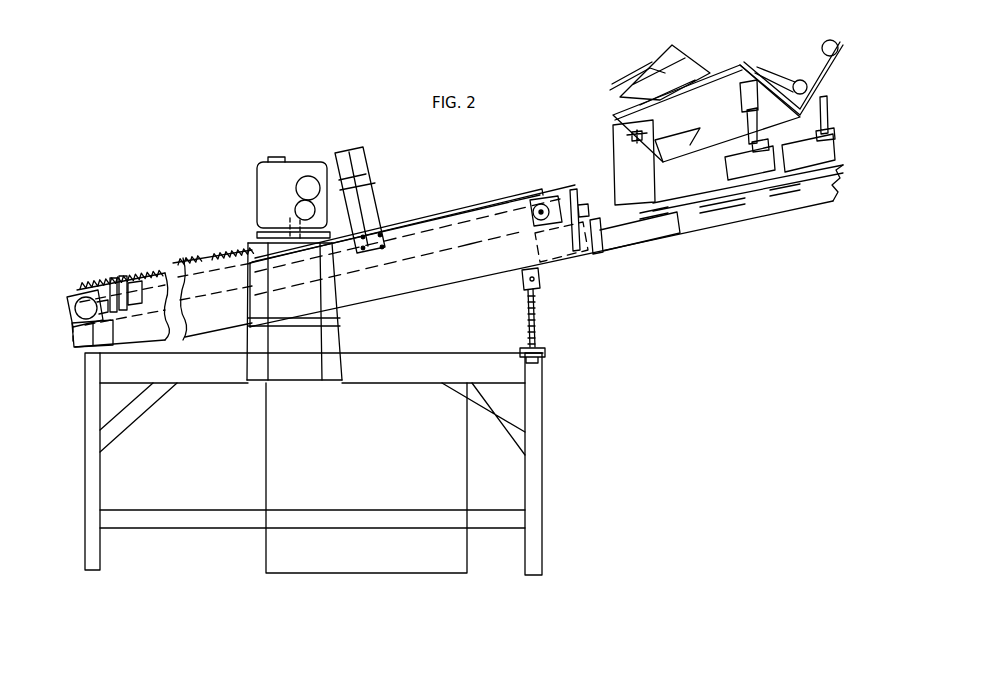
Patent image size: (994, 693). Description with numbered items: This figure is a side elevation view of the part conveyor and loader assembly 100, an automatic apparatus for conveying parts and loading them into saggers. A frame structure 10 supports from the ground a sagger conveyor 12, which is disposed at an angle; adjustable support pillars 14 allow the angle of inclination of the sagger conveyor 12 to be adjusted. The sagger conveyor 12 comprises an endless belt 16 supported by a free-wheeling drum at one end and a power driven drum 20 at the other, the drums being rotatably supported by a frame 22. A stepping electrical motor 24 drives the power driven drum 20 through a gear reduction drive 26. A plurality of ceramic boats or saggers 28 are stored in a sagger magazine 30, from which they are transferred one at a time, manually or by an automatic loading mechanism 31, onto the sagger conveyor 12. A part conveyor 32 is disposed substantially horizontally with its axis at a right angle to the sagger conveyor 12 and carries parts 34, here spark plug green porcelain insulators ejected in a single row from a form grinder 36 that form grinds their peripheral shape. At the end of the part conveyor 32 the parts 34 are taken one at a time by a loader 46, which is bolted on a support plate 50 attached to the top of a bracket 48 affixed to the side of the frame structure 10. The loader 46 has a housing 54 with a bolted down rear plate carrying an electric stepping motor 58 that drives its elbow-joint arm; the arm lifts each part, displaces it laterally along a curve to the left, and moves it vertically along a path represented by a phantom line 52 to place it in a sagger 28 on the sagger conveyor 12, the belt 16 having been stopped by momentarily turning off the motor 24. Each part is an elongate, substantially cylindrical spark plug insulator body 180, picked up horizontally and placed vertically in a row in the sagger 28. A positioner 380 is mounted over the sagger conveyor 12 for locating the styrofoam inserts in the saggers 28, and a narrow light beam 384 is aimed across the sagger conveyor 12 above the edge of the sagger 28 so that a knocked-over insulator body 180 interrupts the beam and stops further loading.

The frame structure 10 is at (100, 495).
The sagger conveyor 12 is at (455, 286).
The adjustable support pillars 14 is at (536, 320).
The endless belt 16 is at (468, 250).
The power driven drum 20 is at (80, 332).
The frame 22 is at (518, 275).
The stepping electrical motor 24 is at (142, 300).
The gear reduction drive 26 is at (72, 295).
The saggers 28 is at (497, 198).
The sagger magazine 30 is at (838, 46).
The automatic loading mechanism 31 is at (590, 200).
The part conveyor 32 is at (312, 250).
The parts 34 is at (128, 270).
The form grinder 36 is at (266, 460).
The loader 46 is at (257, 191).
The bracket 48 is at (251, 309).
The support plate 50 is at (254, 274).
The phantom line 52 is at (292, 210).
The housing 54 is at (263, 212).
The electric stepping motor 58 is at (310, 176).
The part conveyor and loader assembly 100 is at (665, 270).
The spark plug insulator body 180 is at (178, 262).
The positioner 380 is at (364, 148).
The light beam 384 is at (370, 207).